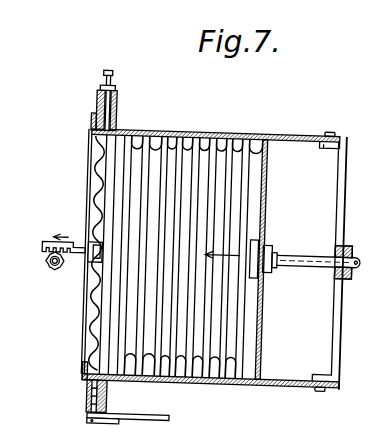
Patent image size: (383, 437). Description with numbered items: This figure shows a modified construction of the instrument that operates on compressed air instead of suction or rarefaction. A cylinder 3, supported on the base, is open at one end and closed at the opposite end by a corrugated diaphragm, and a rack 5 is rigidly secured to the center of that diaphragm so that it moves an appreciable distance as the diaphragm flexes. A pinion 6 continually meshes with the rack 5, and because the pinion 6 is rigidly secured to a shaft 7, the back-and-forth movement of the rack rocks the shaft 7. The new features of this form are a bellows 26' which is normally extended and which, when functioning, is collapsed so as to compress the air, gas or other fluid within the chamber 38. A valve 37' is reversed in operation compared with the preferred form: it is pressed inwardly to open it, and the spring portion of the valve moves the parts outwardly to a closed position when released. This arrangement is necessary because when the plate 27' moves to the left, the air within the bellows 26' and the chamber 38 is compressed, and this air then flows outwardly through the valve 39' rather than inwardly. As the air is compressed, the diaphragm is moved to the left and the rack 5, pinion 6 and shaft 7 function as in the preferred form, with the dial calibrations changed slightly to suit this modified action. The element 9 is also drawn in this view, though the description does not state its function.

The cylinder 3 is at (312, 383).
The rack 5 is at (42, 248).
The pinion 6 is at (50, 268).
The shaft 7 is at (56, 272).
The guide wall 9 is at (88, 336).
The bellows 26' is at (216, 130).
The plate 27' is at (278, 260).
The valve 37' is at (87, 100).
The chamber 38 is at (100, 353).
The valve 39' is at (109, 403).